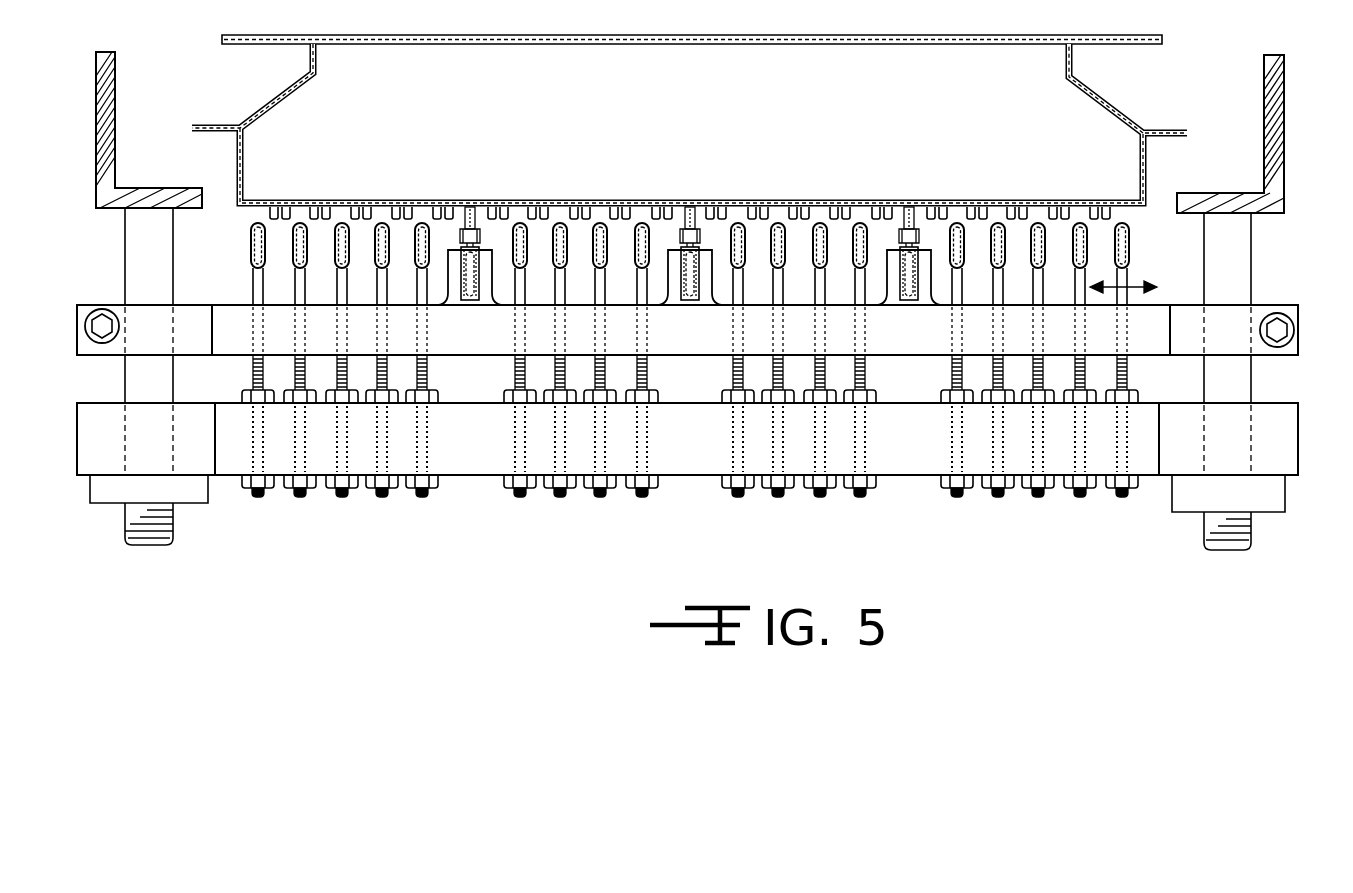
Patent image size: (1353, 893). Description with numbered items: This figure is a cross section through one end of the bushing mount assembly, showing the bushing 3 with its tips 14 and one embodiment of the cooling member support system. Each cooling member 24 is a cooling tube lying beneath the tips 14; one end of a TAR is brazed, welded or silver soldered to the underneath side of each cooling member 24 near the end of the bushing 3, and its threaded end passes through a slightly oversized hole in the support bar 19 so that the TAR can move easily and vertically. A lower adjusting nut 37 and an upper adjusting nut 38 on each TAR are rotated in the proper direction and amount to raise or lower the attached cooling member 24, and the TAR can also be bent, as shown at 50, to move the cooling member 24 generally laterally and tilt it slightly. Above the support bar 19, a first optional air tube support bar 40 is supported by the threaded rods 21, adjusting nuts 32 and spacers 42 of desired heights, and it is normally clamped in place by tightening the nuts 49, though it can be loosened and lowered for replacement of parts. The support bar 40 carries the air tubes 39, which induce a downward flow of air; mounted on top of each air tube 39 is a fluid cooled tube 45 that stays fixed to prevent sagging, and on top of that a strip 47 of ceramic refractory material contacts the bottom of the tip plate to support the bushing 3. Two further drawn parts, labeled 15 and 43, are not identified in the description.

The bushing 3 is at (633, 89).
The tips 14 is at (1053, 207).
The mounting bracket 15 is at (1285, 112).
The support bar 19 is at (1280, 435).
The threaded rods 21 is at (1248, 530).
The cooling member 24 is at (382, 222).
The adjusting nuts 32 is at (105, 495).
The lower adjusting nut 37 is at (372, 487).
The upper adjusting nut 38 is at (588, 397).
The air tube 39 is at (488, 283).
The air tube support bar 40 is at (1147, 332).
The spacer 42 is at (1235, 243).
The threaded post body 43 is at (492, 250).
The fluid cooled tube 45 is at (448, 262).
The refractory strip 47 is at (470, 222).
The nuts 49 is at (90, 313).
The bend in TAR 50 is at (1132, 280).